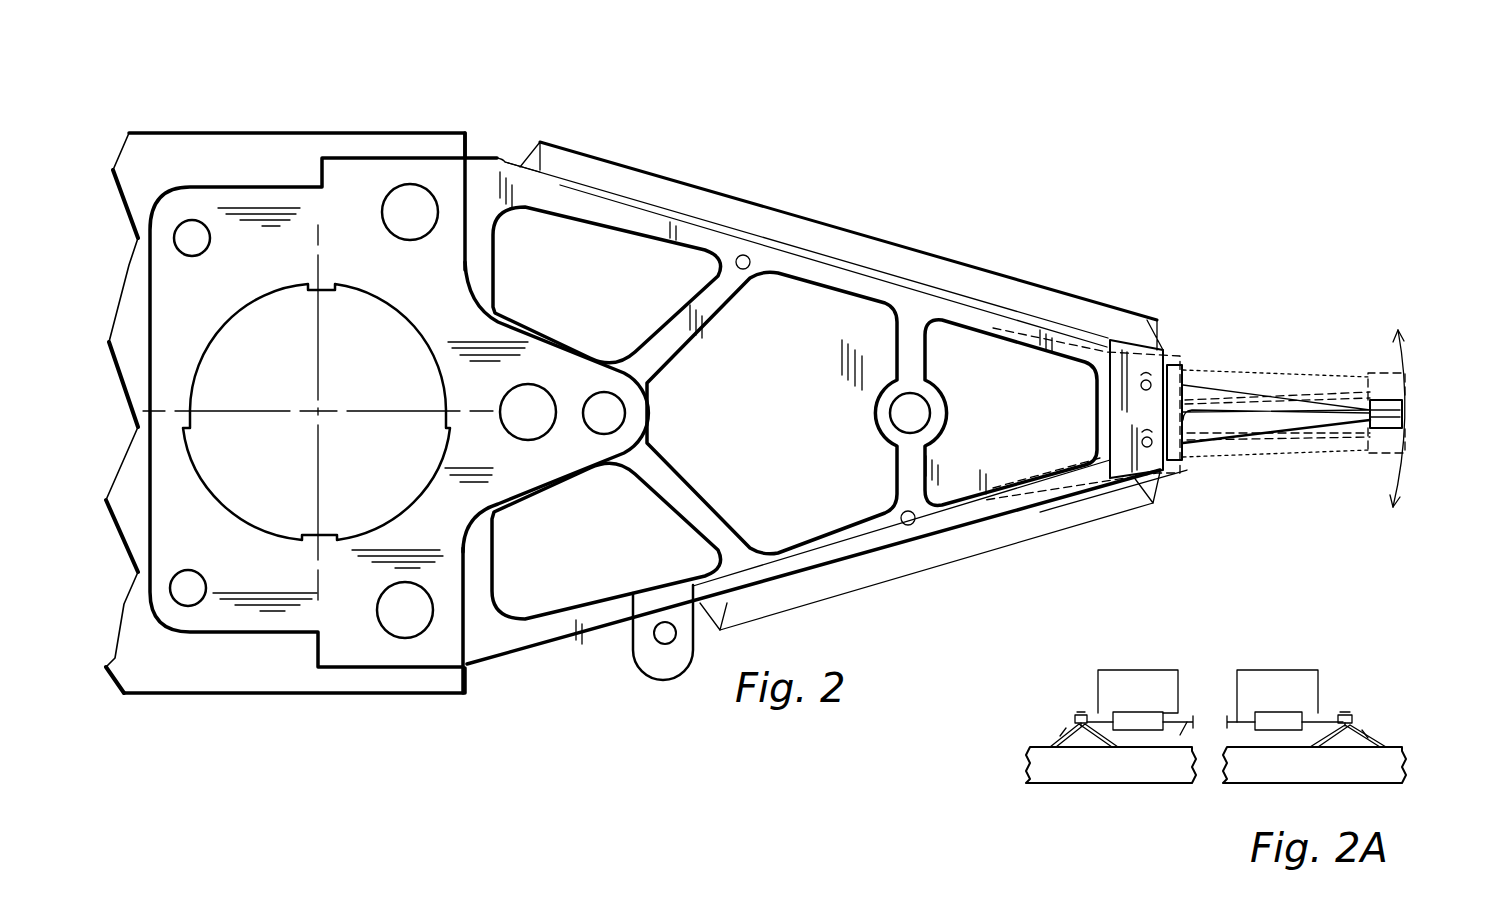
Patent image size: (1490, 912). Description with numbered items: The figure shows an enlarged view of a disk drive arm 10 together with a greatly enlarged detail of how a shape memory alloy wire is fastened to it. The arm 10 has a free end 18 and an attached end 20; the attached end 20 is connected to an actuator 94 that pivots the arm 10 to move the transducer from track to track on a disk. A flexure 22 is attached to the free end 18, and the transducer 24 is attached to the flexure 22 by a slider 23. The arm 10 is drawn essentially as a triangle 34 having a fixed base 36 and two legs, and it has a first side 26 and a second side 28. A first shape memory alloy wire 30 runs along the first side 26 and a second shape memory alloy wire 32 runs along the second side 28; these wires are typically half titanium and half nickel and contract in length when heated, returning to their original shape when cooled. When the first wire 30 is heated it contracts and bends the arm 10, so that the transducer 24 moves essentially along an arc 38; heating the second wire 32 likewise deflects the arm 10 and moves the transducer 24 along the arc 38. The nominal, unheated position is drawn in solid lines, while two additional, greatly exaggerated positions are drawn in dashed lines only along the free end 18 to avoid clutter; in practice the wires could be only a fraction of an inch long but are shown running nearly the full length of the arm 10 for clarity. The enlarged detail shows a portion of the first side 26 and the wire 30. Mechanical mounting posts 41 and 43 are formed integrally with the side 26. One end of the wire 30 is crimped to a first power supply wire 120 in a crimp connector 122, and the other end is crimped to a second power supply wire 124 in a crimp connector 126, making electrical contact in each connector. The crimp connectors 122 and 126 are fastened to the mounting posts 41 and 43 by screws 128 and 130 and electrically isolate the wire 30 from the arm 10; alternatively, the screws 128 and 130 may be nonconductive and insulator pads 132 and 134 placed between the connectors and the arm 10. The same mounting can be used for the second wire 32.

In FIG. 2, the arm 10 is at (811, 353).
In FIG. 2, the free end 18 is at (1152, 468).
In FIG. 2, the attached end 20 is at (230, 187).
In FIG. 2, the flexure 22 is at (1268, 423).
In FIG. 2, the slider 23 is at (1403, 408).
In FIG. 2, the transducer 24 is at (1398, 425).
In FIG. 2, the first side 26 is at (1062, 328).
In FIG. 2A, the first side 26 is at (1077, 785).
In FIG. 2, the second side 28 is at (1068, 502).
In FIG. 2, the first shape memory alloy wire 30 is at (882, 242).
In FIG. 2A, the first shape memory alloy wire 30 is at (1187, 722).
In FIG. 2, the second shape memory alloy wire 32 is at (846, 596).
In FIG. 2, the triangle 34 is at (648, 210).
In FIG. 2, the fixed base 36 is at (478, 268).
In FIG. 2, the arc 38 is at (1407, 362).
In FIG. 2A, the mechanical mounting post 41 is at (1053, 740).
In FIG. 2A, the mechanical mounting post 43 is at (1370, 740).
In FIG. 2, the actuator 94 is at (265, 133).
In FIG. 2A, the first power supply wire 120 is at (1158, 670).
In FIG. 2A, the crimp connector 122 is at (1137, 712).
In FIG. 2A, the second power supply wire 124 is at (1280, 670).
In FIG. 2A, the crimp connector 126 is at (1267, 712).
In FIG. 2A, the screw 128 is at (1077, 712).
In FIG. 2A, the screw 130 is at (1352, 713).
In FIG. 2A, the insulator pad 132 is at (1070, 730).
In FIG. 2A, the insulator pad 134 is at (1360, 733).